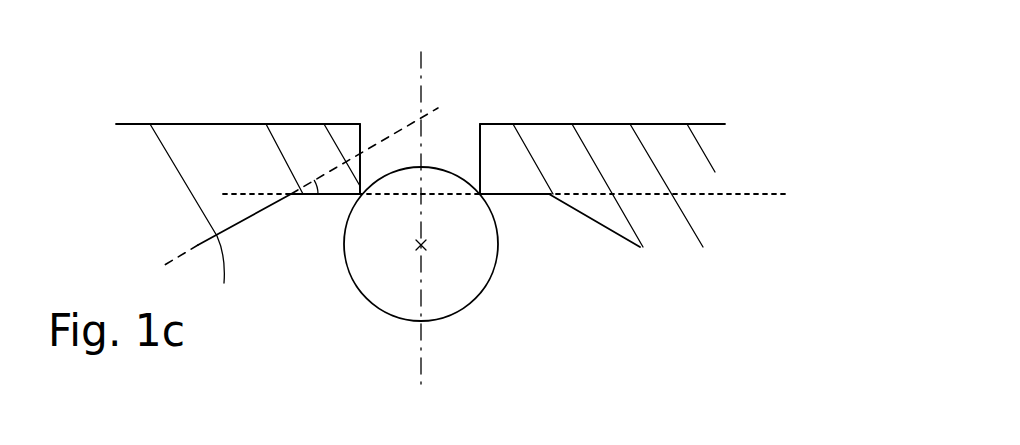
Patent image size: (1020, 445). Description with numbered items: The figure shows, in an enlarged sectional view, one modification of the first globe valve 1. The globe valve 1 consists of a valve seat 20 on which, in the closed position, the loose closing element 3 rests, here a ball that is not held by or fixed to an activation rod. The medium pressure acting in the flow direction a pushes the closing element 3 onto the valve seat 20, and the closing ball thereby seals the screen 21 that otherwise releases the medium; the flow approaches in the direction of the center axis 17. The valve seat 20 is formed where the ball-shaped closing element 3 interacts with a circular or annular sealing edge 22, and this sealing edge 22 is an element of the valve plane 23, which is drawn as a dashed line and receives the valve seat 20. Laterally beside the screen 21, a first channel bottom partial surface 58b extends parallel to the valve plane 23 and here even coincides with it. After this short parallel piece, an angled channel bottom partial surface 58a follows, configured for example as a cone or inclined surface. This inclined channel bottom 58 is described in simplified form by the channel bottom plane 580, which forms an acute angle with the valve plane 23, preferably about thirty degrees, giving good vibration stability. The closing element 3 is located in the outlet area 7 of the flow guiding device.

The globe valve 1 is at (608, 308).
The closing element 3 is at (442, 302).
The outlet area 7 is at (549, 269).
The center axis 17 is at (422, 55).
The valve seat 20 is at (483, 190).
The screen 21 is at (393, 158).
The sealing edge 22 is at (358, 193).
The valve plane 23 is at (757, 197).
The channel bottom 58 is at (238, 222).
The channel bottom partial surface 58a is at (208, 124).
The first channel bottom partial surface 58b is at (330, 196).
The channel bottom plane 580 is at (413, 121).
The flow direction a is at (437, 345).